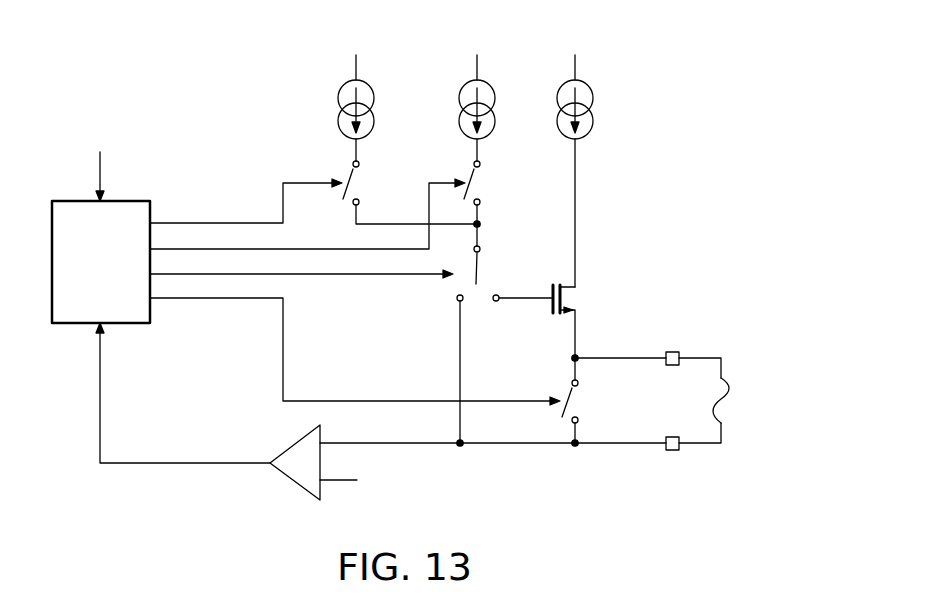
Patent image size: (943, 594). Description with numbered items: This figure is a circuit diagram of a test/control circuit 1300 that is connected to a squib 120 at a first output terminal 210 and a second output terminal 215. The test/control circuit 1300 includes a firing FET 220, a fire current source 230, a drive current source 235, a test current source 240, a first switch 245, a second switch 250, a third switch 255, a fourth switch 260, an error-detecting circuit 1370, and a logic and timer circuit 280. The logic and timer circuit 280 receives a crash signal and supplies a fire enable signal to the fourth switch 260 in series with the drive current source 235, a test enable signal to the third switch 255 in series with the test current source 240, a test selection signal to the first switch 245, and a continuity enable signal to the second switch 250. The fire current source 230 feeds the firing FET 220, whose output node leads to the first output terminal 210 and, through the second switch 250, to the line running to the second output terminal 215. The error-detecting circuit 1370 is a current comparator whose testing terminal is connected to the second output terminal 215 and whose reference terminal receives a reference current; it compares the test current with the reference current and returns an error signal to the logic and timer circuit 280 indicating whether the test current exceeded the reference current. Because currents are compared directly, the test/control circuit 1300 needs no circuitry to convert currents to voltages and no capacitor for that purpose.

The test/control circuit 1300 is at (136, 72).
The logic and timer circuit 280 is at (131, 200).
The drive current source 235 is at (343, 80).
The test current source 240 is at (465, 80).
The fire current source 230 is at (562, 80).
The fourth switch 260 is at (360, 184).
The third switch 255 is at (481, 184).
The first switch 245 is at (486, 277).
The firing FET 220 is at (552, 316).
The second switch 250 is at (579, 402).
The first output terminal 210 is at (672, 352).
The second output terminal 215 is at (672, 450).
The squib 120 is at (729, 397).
The error-detecting circuit 1370 is at (289, 449).